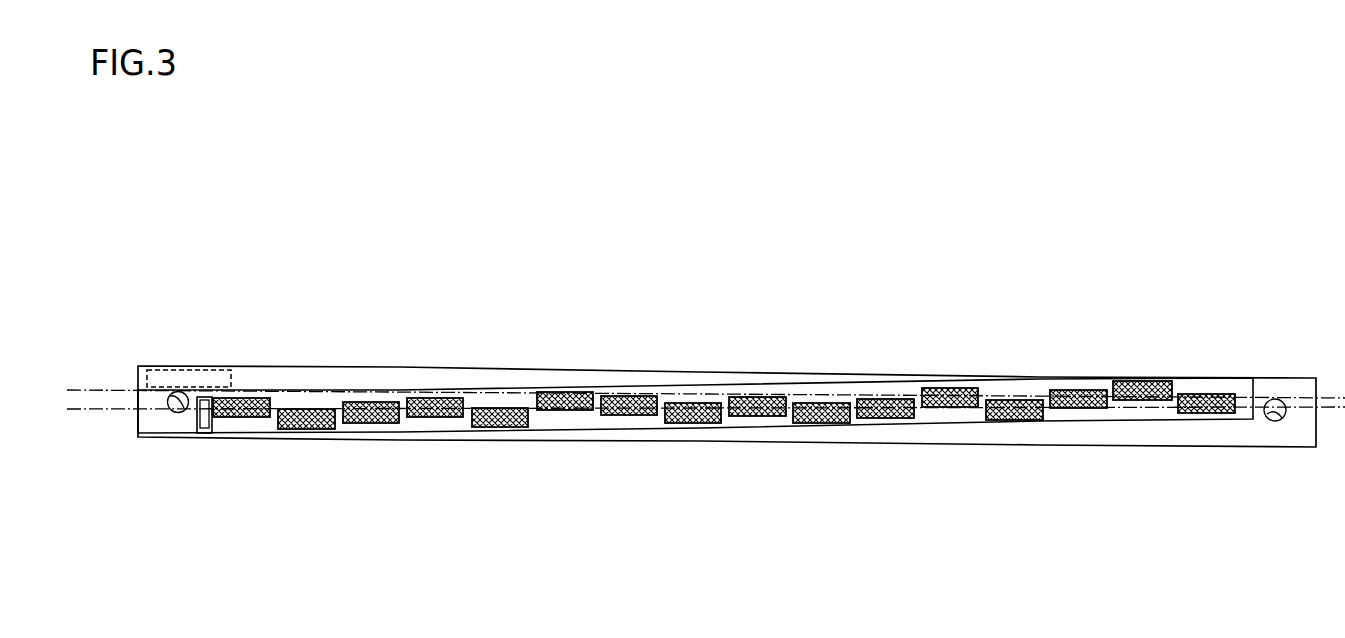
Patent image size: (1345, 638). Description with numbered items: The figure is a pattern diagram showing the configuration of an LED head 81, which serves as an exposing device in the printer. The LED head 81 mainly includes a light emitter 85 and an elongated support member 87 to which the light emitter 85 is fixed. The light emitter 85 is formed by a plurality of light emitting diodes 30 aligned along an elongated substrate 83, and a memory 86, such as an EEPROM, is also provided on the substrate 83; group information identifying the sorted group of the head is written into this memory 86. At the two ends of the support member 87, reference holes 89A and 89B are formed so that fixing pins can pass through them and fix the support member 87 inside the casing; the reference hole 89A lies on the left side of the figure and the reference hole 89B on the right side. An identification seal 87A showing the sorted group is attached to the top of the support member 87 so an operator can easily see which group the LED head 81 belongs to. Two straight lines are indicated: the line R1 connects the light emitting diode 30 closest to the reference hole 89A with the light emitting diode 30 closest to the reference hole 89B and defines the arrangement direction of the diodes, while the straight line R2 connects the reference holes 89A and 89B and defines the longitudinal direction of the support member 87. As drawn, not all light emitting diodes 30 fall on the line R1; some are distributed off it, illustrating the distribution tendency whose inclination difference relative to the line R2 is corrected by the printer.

The LED head 81 is at (656, 312).
The support member 87 is at (1170, 432).
The identification seal 87A is at (187, 370).
The light emitting diode 30 is at (355, 423).
The substrate 83 is at (427, 417).
The light emitter 85 is at (724, 490).
The memory 86 is at (210, 426).
The reference hole 89A is at (171, 396).
The reference hole 89B is at (1282, 421).
The line R1 is at (662, 408).
The straight line R2 is at (712, 393).